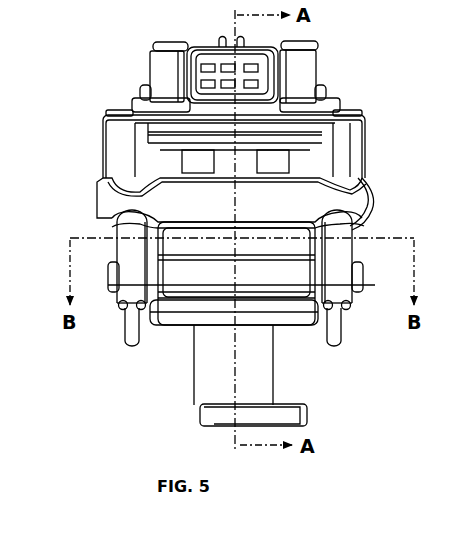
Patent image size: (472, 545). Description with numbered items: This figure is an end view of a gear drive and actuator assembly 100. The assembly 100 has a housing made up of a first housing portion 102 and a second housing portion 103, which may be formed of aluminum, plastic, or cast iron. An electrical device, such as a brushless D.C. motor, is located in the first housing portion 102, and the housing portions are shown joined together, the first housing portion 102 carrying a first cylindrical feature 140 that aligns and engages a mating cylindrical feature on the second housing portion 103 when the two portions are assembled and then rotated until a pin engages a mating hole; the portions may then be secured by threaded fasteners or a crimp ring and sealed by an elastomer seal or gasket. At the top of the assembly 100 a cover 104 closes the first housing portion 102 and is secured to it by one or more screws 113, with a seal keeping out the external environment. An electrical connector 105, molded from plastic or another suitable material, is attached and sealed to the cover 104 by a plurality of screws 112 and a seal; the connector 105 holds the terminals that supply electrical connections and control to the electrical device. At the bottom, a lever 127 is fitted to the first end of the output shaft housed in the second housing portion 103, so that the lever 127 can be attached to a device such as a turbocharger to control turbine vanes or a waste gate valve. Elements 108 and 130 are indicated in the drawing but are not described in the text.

The gear drive and actuator assembly 100 is at (84, 136).
The first housing portion 102 is at (364, 165).
The second housing portion 103 is at (90, 205).
The cover 104 is at (130, 100).
The electrical connector 105 is at (147, 60).
The side tab 108 is at (358, 298).
The screws 112 is at (155, 40).
The screws 113 is at (106, 117).
The lever 127 is at (307, 418).
The electrical connector 130 is at (270, 75).
The first cylindrical feature 140 is at (123, 333).